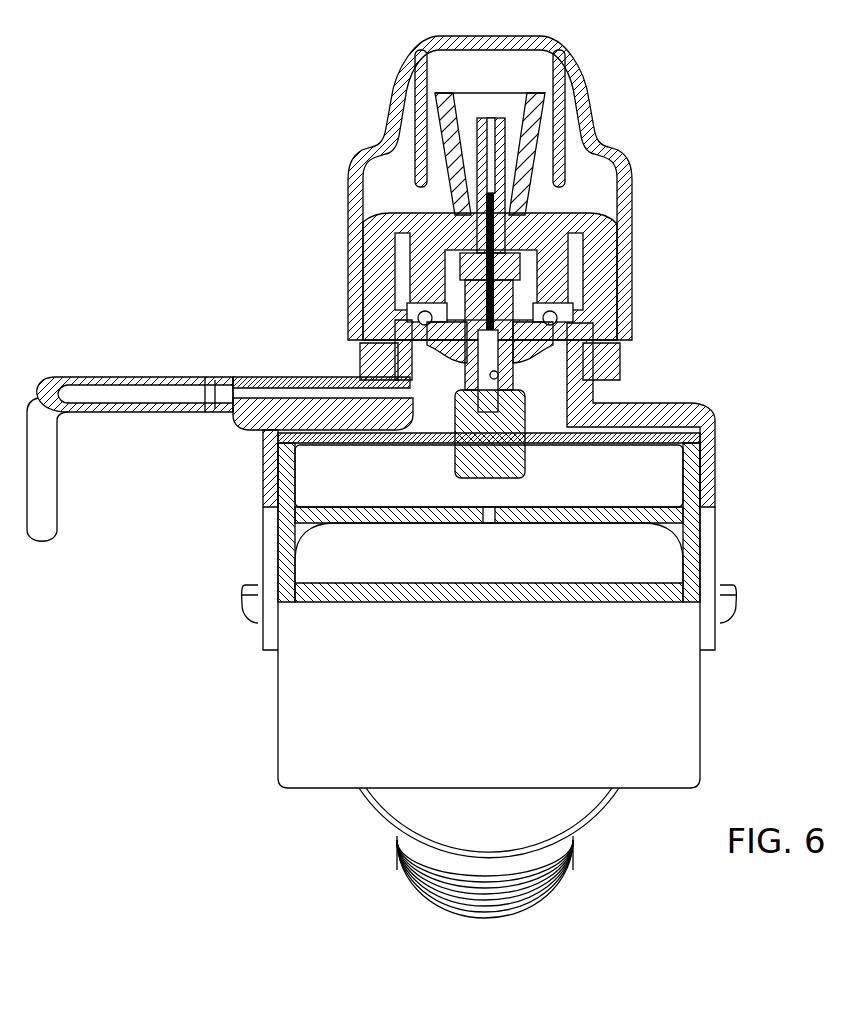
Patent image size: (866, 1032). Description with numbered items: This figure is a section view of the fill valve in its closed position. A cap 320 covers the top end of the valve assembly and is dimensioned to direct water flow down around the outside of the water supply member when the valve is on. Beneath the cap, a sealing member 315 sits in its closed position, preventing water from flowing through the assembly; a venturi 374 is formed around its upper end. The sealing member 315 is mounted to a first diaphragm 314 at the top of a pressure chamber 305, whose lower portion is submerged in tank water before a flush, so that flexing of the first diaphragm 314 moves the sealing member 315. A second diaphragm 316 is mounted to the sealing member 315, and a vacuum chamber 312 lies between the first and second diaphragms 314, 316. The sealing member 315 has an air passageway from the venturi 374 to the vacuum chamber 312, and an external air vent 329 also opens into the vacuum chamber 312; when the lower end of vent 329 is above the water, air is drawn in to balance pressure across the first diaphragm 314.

The pressure chamber 305 is at (302, 716).
The vacuum chamber 312 is at (425, 380).
The first diaphragm 314 is at (550, 430).
The sealing member 315 is at (458, 302).
The second diaphragm 316 is at (540, 315).
The cap 320 is at (378, 103).
The external air vent 329 is at (145, 393).
The venturi 374 is at (484, 114).